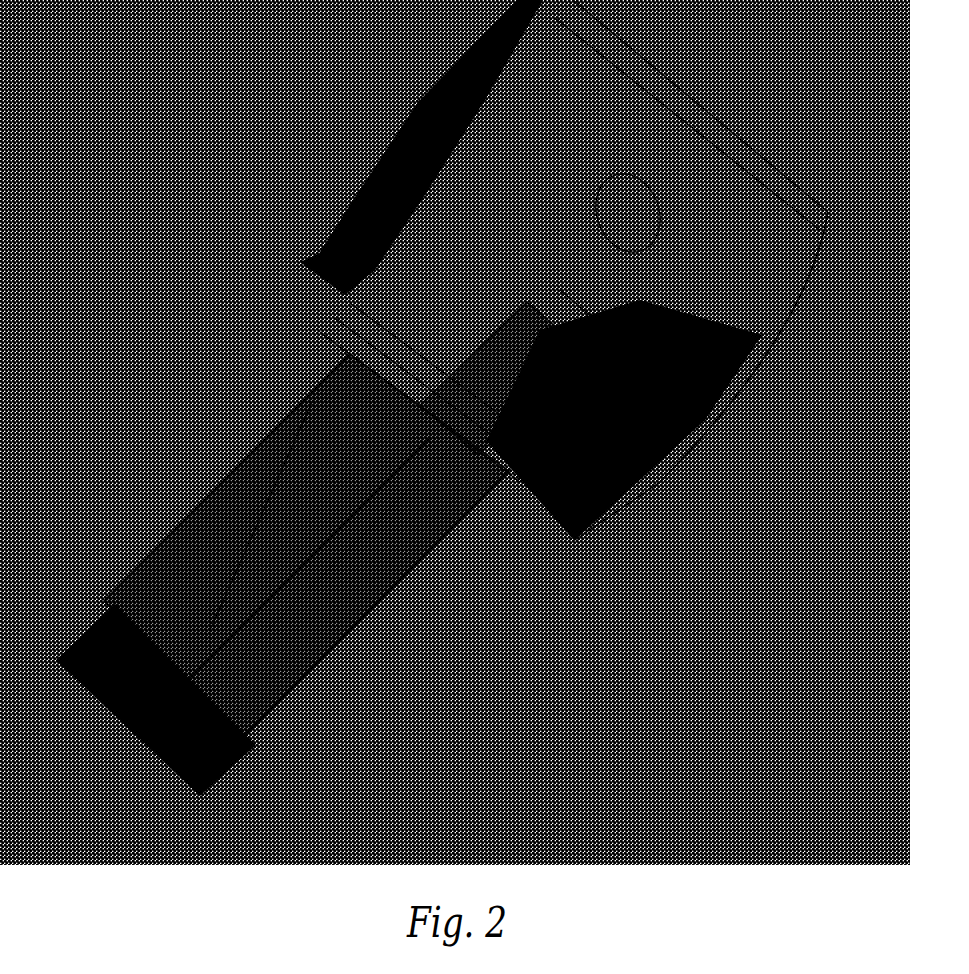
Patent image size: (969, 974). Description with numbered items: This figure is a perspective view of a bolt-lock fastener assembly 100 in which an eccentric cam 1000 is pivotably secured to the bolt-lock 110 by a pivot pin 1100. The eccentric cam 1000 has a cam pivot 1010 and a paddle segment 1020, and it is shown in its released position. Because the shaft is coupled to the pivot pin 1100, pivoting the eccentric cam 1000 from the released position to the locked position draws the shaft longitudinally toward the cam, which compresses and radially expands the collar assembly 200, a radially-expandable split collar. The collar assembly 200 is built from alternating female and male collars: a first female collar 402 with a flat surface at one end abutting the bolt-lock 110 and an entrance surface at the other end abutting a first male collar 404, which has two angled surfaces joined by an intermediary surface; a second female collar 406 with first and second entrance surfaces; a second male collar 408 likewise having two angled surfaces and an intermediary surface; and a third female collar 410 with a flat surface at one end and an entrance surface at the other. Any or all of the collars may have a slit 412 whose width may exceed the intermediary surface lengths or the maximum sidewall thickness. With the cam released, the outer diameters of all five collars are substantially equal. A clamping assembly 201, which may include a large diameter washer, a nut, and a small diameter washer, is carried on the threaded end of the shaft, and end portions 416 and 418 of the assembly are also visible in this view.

The handheld device 100 is at (236, 174).
The bolt-lock 110 is at (528, 102).
The eccentric cam 1000 is at (656, 489).
The cam pivot 1010 is at (342, 290).
The paddle segment 1020 is at (760, 337).
The pivot pin 1100 is at (338, 222).
The collar assembly 200 is at (419, 624).
The clamping assembly 201 is at (420, 443).
The first female collar 402 is at (447, 533).
The first male collar 404 is at (260, 441).
The second female collar 406 is at (356, 629).
The second male collar 408 is at (182, 526).
The third female collar 410 is at (280, 708).
The slit 412 is at (387, 503).
The end edge 416 is at (218, 718).
The end cap 418 is at (227, 767).